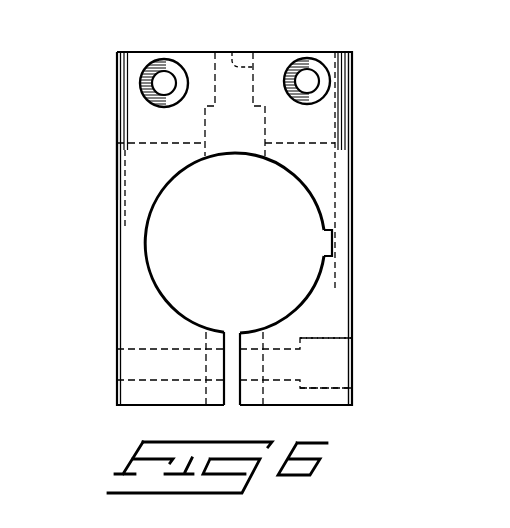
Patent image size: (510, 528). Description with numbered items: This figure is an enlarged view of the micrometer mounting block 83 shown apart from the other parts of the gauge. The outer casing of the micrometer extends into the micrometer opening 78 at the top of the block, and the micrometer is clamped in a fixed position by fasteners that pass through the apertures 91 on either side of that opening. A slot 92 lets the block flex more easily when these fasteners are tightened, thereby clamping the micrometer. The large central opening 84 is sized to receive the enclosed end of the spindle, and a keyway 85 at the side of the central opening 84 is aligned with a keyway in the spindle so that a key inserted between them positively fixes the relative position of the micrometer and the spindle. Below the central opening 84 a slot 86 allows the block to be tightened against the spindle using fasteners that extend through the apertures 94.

The micrometer opening 78 is at (235, 44).
The micrometer mounting block 83 is at (350, 115).
The central opening 84 is at (234, 243).
The keyway 85 is at (326, 247).
The slot 86 is at (233, 347).
The apertures 91 is at (160, 80).
The slot 92 is at (127, 118).
The apertures 94 is at (348, 361).